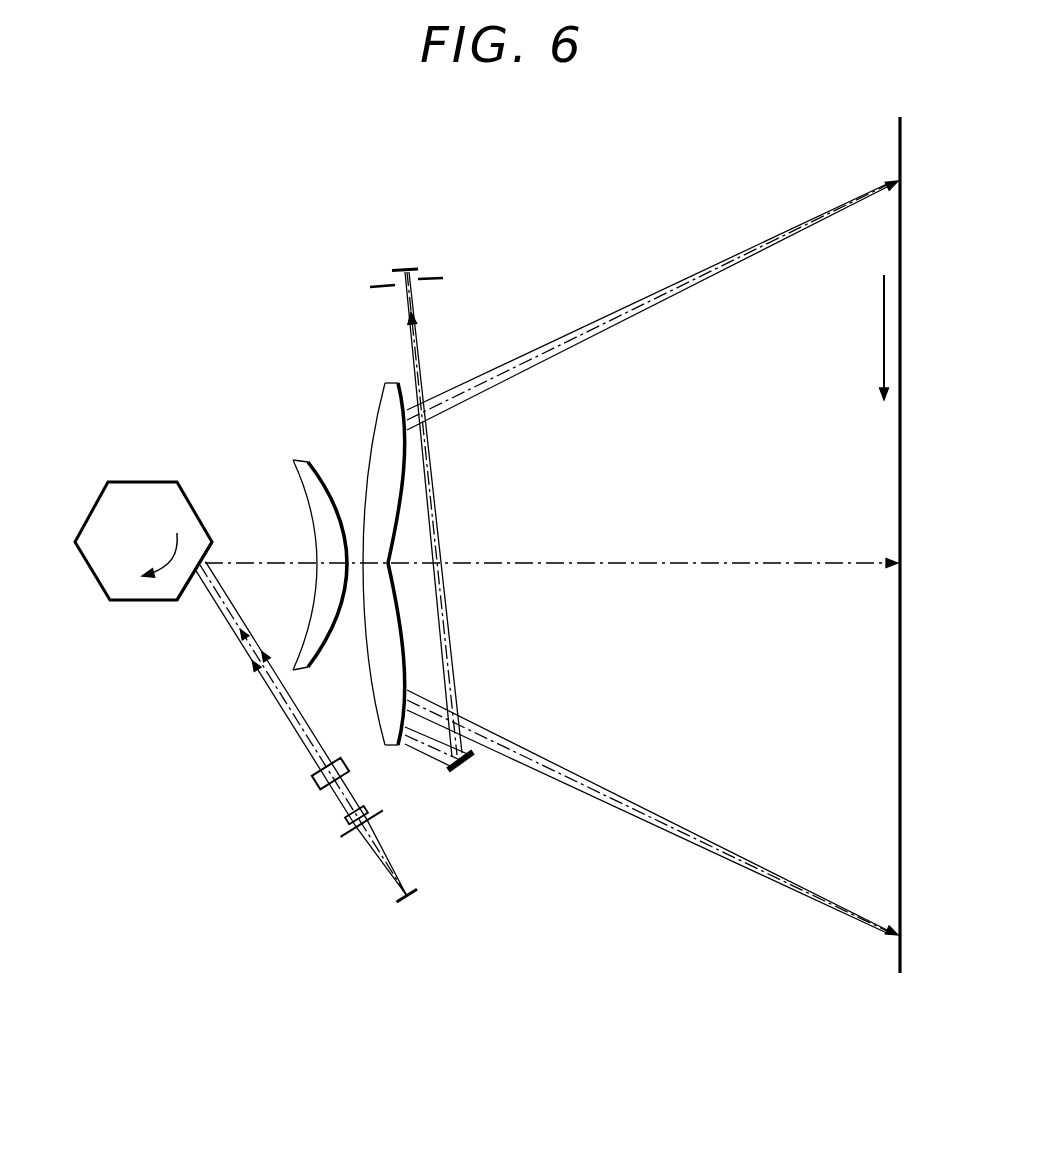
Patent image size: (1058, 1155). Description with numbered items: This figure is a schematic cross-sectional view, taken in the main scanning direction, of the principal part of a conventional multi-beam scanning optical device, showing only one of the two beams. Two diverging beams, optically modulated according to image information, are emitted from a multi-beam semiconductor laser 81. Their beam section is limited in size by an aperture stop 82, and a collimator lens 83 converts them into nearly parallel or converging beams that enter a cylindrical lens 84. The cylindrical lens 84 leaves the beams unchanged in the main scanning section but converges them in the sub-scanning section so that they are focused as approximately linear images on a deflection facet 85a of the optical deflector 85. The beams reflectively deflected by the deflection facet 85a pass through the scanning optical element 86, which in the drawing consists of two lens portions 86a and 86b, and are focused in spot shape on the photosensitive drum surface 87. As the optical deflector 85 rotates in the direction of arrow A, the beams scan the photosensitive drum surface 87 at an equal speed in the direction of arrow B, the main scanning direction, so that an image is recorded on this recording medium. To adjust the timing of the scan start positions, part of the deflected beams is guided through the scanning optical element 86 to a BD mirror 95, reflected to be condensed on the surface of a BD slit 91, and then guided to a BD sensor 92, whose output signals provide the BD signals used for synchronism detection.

The multi-beam semiconductor laser 81 is at (402, 906).
The aperture stop 82 is at (341, 840).
The collimator lens 83 is at (346, 822).
The cylindrical lens 84 is at (318, 779).
The optical deflector 85 is at (153, 481).
The deflection facet 85a is at (191, 601).
The scanning optical element 86 is at (253, 387).
The scanning optical element lens 86a is at (300, 458).
The scanning optical element lens 86b is at (392, 381).
The photosensitive drum surface 87 is at (901, 142).
The BD slit 91 is at (432, 281).
The BD sensor 92 is at (413, 268).
The BD mirror 95 is at (457, 776).
The direction of rotation of the optical deflector A is at (163, 578).
The main scanning direction B is at (880, 296).